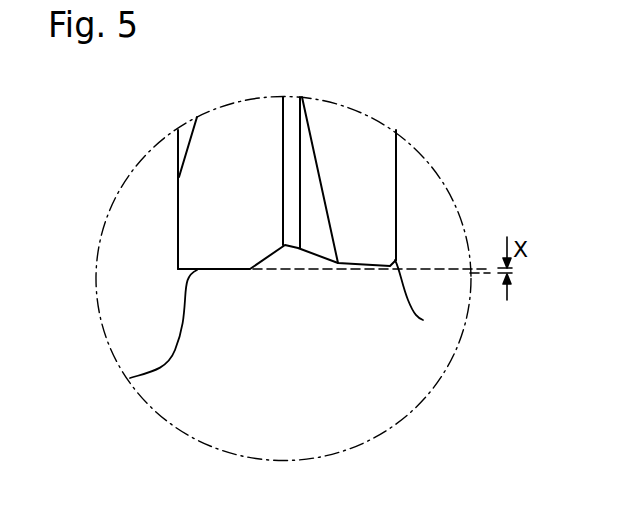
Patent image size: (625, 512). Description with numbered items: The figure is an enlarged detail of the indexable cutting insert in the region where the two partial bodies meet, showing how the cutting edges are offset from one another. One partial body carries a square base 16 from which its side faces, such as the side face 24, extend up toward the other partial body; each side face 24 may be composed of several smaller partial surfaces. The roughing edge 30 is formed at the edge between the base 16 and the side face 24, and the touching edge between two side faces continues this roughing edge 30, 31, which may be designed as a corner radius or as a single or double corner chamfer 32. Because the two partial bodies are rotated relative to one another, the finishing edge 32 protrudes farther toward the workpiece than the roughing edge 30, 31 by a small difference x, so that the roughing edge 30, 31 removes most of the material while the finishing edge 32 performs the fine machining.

The base 16 is at (176, 228).
The side face 24 is at (243, 125).
The roughing edge 30 is at (397, 218).
The roughing edge 31 is at (425, 300).
The finishing edge 32 is at (130, 378).